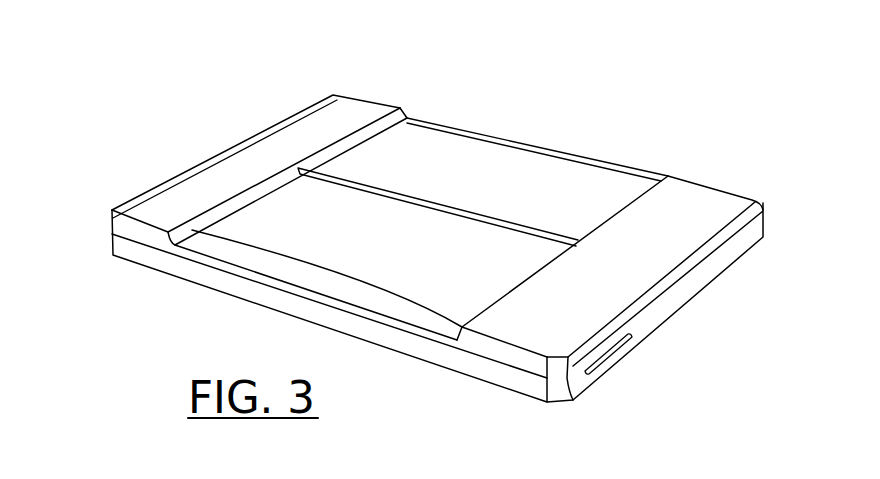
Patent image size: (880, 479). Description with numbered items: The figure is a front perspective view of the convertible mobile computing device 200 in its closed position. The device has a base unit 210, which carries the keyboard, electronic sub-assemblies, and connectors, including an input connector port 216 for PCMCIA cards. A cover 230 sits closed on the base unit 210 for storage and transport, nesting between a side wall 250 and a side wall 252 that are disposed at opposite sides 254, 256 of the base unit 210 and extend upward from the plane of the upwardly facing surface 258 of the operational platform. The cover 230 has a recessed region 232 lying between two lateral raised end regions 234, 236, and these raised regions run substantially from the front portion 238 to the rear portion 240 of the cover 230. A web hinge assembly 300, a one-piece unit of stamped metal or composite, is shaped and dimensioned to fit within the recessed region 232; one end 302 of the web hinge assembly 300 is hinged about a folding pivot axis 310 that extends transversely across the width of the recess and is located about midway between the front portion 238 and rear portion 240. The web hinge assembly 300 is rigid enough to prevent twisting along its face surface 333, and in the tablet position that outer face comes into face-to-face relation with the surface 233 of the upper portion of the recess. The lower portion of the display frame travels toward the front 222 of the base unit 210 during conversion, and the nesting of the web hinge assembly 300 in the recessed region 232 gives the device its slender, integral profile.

The convertible mobile computing device 200 is at (585, 64).
The base unit 210 is at (737, 248).
The input connector port 216 is at (617, 355).
The front of the base unit 222 is at (187, 288).
The cover 230 is at (693, 160).
The recessed region 232 is at (252, 198).
The surface of the upper portion of the recess 233 is at (368, 233).
The lateral raised end region 234 is at (143, 208).
The lateral raised end region 236 is at (522, 337).
The front portion of the cover 238 is at (125, 232).
The rear portion of the cover 240 is at (355, 80).
The side wall 250 is at (167, 177).
The side wall 252 is at (567, 368).
The side of the base unit 254 is at (252, 125).
The side of the base unit 256 is at (673, 330).
The upwardly facing surface 258 is at (462, 352).
The web hinge assembly 300 is at (535, 138).
The end of the web hinge assembly 302 is at (405, 183).
The folding pivot axis 310 is at (340, 173).
The outer face surface 333 is at (513, 191).